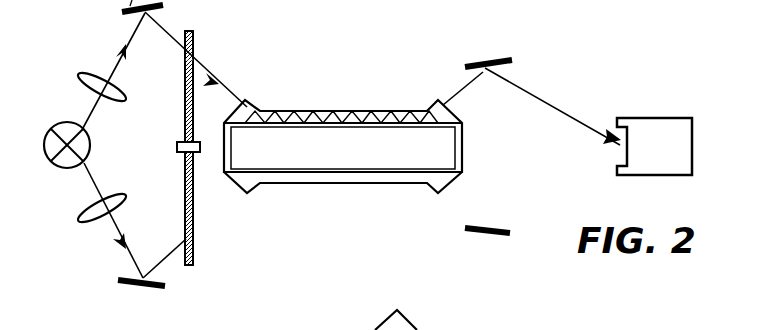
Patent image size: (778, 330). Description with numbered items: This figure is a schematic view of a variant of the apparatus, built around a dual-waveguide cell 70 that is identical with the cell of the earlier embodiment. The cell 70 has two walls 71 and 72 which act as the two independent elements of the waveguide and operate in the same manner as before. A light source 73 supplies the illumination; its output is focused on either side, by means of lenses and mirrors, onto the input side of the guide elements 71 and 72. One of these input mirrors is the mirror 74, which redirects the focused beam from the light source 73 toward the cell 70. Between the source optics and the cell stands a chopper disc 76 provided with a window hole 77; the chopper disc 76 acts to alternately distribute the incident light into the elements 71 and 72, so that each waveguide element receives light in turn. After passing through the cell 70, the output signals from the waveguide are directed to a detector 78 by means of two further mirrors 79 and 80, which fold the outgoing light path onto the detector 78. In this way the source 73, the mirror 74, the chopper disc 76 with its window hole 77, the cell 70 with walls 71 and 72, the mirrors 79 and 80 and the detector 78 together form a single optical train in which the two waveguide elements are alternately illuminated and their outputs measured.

The dual-waveguide cell 70 is at (359, 161).
The wall 71 is at (355, 185).
The wall 72 is at (343, 110).
The light source 73 is at (61, 131).
The mirror 74 is at (129, 289).
The chopper disc 76 is at (193, 247).
The window hole 77 is at (193, 48).
The detector 78 is at (683, 145).
The mirror 79 is at (512, 62).
The mirror 80 is at (486, 237).